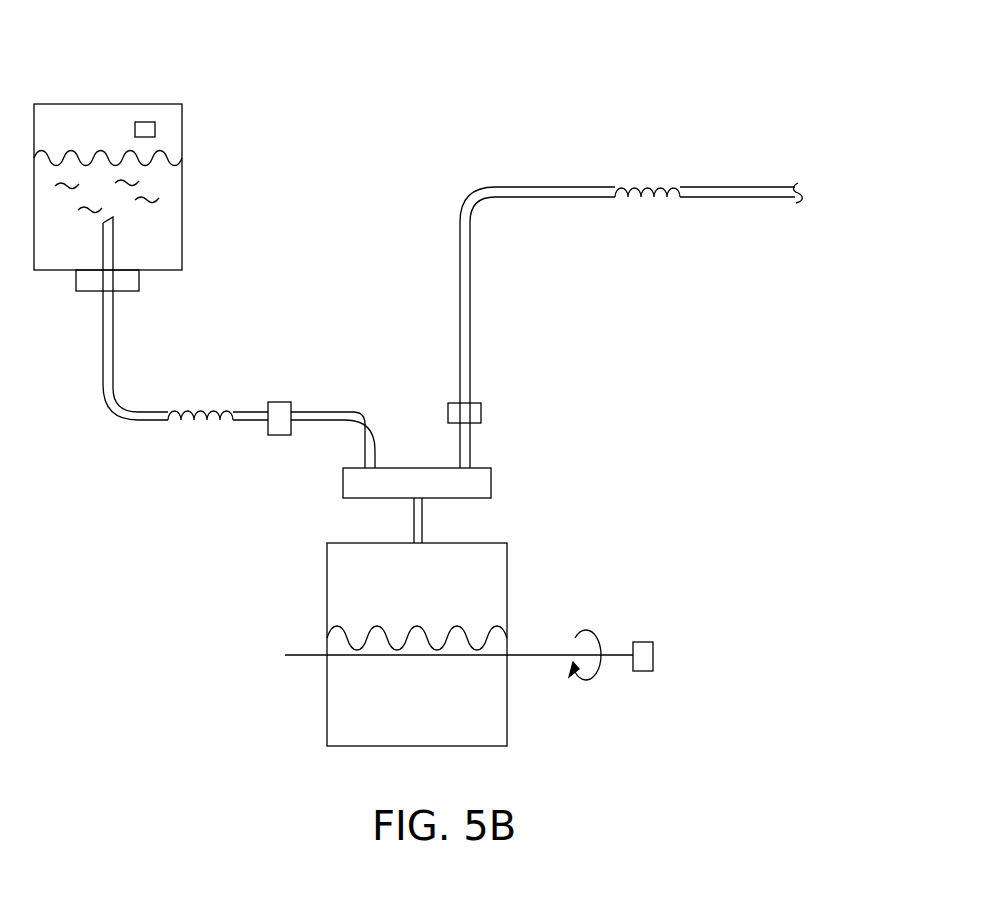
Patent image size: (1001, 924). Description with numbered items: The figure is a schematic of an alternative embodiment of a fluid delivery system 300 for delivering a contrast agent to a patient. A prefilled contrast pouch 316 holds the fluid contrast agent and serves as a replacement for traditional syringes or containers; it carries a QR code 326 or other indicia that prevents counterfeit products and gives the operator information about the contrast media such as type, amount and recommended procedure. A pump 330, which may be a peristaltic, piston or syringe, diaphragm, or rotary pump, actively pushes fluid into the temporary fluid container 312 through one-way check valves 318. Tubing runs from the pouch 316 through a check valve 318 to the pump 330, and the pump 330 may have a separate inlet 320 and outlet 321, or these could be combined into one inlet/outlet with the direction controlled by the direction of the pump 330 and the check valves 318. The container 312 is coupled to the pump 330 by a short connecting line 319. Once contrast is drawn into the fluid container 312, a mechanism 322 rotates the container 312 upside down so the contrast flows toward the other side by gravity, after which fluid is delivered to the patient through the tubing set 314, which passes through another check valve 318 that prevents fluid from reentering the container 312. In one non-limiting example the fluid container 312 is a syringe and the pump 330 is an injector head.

The fluid delivery system 300 is at (776, 62).
The temporary fluid container 312 is at (508, 582).
The tube set 314 is at (752, 198).
The prefilled contrast pouch 316 is at (160, 230).
The one-way check valve 318 is at (278, 402).
The connection tube 319 is at (414, 518).
The inlet 320 is at (330, 412).
The outlet 321 is at (470, 452).
The mechanism 322 is at (653, 655).
The QR code 326 is at (141, 122).
The pump 330 is at (492, 480).